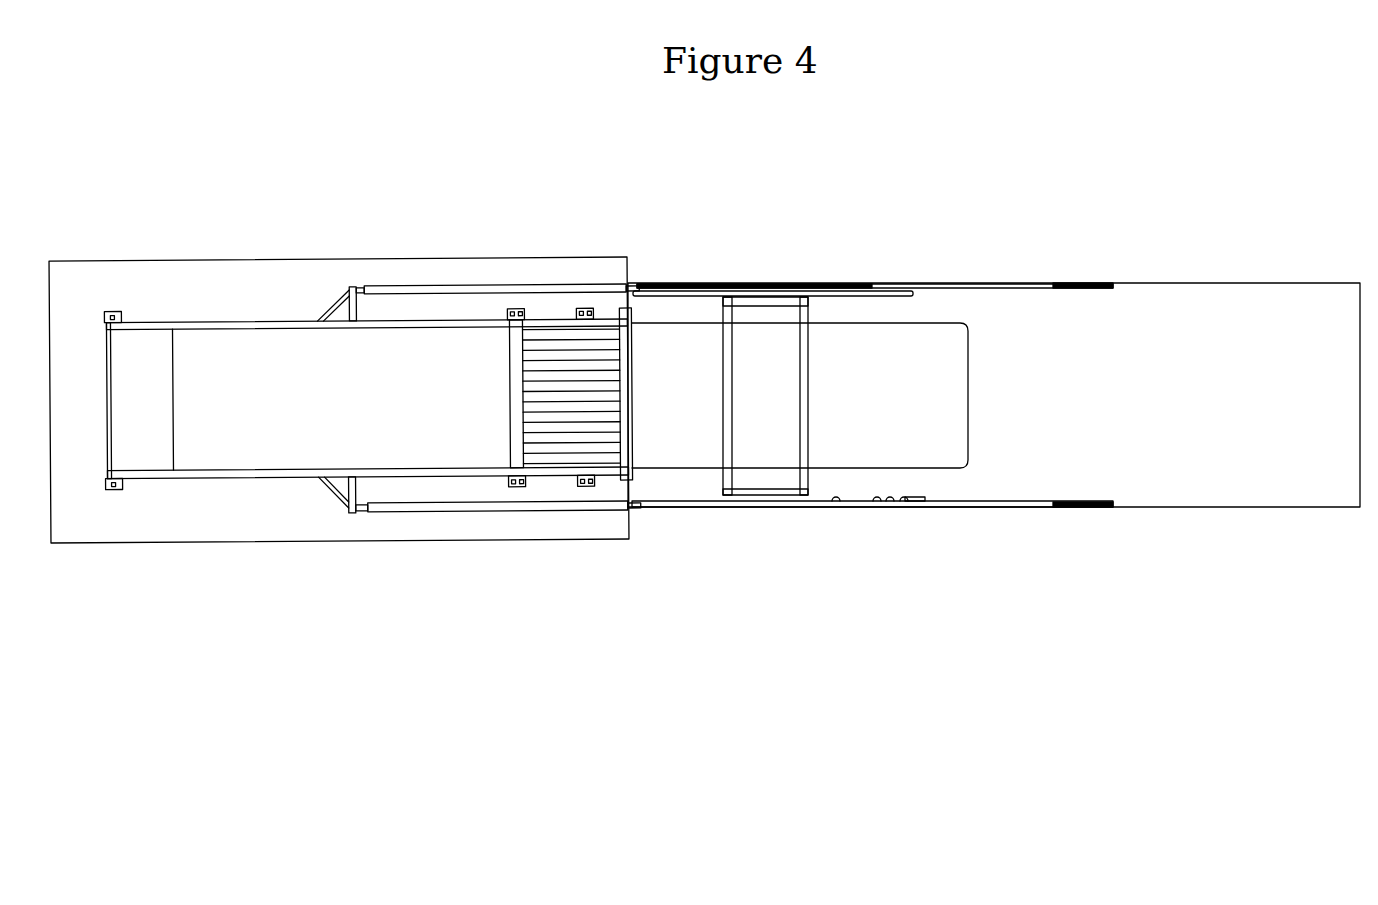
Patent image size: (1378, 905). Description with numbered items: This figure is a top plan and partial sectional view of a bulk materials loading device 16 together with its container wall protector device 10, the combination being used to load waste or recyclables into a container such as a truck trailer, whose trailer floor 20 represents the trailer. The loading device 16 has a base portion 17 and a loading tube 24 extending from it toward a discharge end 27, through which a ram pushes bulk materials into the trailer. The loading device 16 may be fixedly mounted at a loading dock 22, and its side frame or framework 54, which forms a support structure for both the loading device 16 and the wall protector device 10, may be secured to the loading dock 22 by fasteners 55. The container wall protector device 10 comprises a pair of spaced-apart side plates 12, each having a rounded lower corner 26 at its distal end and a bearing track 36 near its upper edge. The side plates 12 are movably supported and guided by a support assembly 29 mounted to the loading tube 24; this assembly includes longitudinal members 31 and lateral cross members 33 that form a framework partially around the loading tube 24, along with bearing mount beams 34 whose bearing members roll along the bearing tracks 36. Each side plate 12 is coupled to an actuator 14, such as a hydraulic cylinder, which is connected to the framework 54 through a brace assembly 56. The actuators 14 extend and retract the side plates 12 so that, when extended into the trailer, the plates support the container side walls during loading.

The container wall protector device 10 is at (781, 182).
The side plates 12 is at (1017, 291).
The actuator 14 is at (485, 278).
The loading device 16 is at (306, 204).
The base portion 17 is at (364, 206).
The trailer floor 20 is at (1230, 400).
The loading dock 22 is at (562, 258).
The loading tube 24 is at (882, 416).
The rounded lower corner 26 is at (1108, 288).
The discharge end 27 is at (947, 368).
The support assembly 29 is at (679, 411).
The longitudinal members 31 is at (765, 312).
The lateral cross members 33 is at (723, 375).
The bearing mount beam 34 is at (903, 500).
The bearing track 36 is at (912, 294).
The side frame 54 is at (216, 320).
The fasteners 55 is at (113, 311).
The brace assembly 56 is at (314, 296).